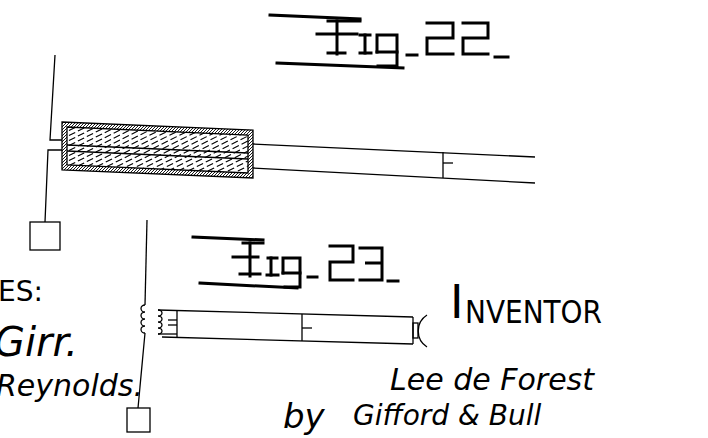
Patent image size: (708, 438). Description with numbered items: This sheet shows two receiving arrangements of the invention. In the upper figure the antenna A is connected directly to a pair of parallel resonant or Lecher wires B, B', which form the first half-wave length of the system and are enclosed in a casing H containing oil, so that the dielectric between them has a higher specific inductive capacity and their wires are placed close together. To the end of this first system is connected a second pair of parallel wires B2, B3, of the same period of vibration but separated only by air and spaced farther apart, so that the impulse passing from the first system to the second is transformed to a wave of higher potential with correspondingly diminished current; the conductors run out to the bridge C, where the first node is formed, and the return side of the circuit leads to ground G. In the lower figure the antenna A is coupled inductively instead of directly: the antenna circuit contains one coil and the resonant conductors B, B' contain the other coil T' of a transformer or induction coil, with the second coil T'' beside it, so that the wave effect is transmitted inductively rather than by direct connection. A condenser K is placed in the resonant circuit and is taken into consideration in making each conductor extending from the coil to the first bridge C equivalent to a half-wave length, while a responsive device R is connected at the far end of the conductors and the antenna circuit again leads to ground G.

In FIG. 22, the antenna A is at (68, 97).
In FIG. 23, the antenna A is at (143, 256).
In FIG. 22, the parallel wire B is at (230, 130).
In FIG. 23, the parallel wire B is at (288, 315).
In FIG. 22, the parallel wire B' is at (157, 184).
In FIG. 23, the parallel wire B' is at (287, 357).
In FIG. 22, the parallel wire B2 is at (338, 147).
In FIG. 22, the parallel wire B3 is at (360, 174).
In FIG. 22, the bridge C is at (459, 165).
In FIG. 23, the bridge C is at (317, 328).
In FIG. 22, the casing H is at (202, 180).
In FIG. 22, the ground connection G is at (46, 200).
In FIG. 23, the ground connection G is at (138, 382).
In FIG. 23, the secondary coil T' is at (126, 315).
In FIG. 23, the secondary coil T'' is at (172, 305).
In FIG. 23, the condenser K is at (185, 323).
In FIG. 23, the receiver R is at (433, 333).